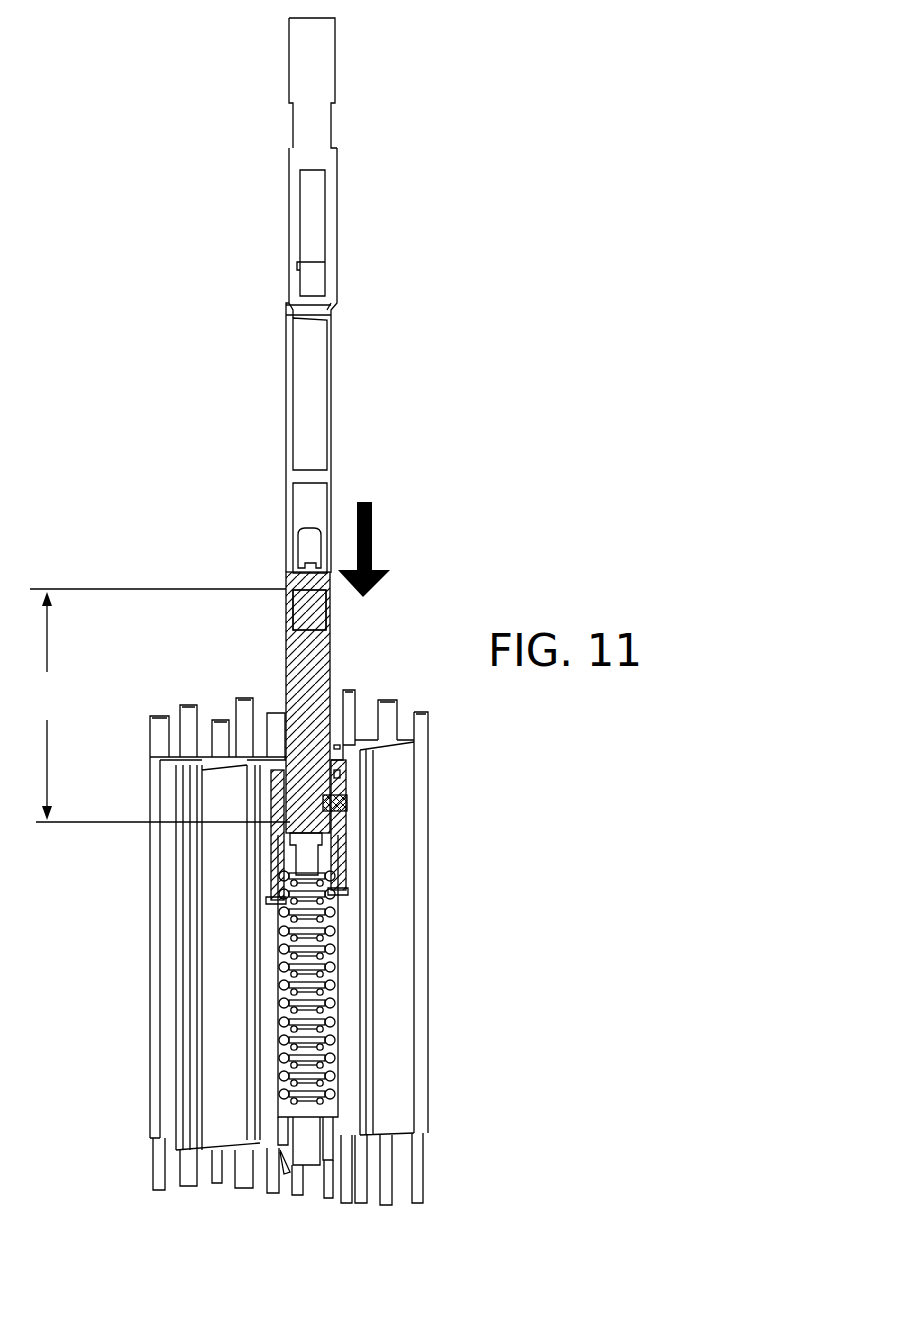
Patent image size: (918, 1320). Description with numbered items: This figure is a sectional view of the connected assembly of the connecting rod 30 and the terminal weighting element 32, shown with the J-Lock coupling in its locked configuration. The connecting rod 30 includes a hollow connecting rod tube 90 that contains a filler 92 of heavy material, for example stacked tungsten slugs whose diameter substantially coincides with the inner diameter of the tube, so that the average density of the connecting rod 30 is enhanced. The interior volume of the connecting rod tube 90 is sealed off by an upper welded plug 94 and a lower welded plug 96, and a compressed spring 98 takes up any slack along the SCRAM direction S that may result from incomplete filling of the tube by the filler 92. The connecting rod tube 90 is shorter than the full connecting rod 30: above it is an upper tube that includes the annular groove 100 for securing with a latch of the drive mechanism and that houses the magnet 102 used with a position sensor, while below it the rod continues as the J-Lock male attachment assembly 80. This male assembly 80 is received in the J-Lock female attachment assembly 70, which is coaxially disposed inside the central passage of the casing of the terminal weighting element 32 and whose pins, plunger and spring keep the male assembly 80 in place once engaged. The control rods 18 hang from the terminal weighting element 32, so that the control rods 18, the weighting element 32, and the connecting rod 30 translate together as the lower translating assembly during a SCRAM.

The control rods 18 is at (448, 1177).
The connecting rod 30 is at (296, 425).
The terminal weighting element 32 is at (419, 949).
The J-Lock female attachment assembly 70 is at (340, 811).
The J-Lock male attachment assembly 80 is at (160, 705).
The connecting rod tube 90 is at (268, 314).
The filler 92 is at (312, 395).
The upper welded plug 94 is at (309, 287).
The lower welded plug 96 is at (286, 587).
The compressed spring 98 is at (305, 560).
The annular groove 100 is at (336, 125).
The magnet 102 is at (318, 188).
The SCRAM direction S is at (374, 518).